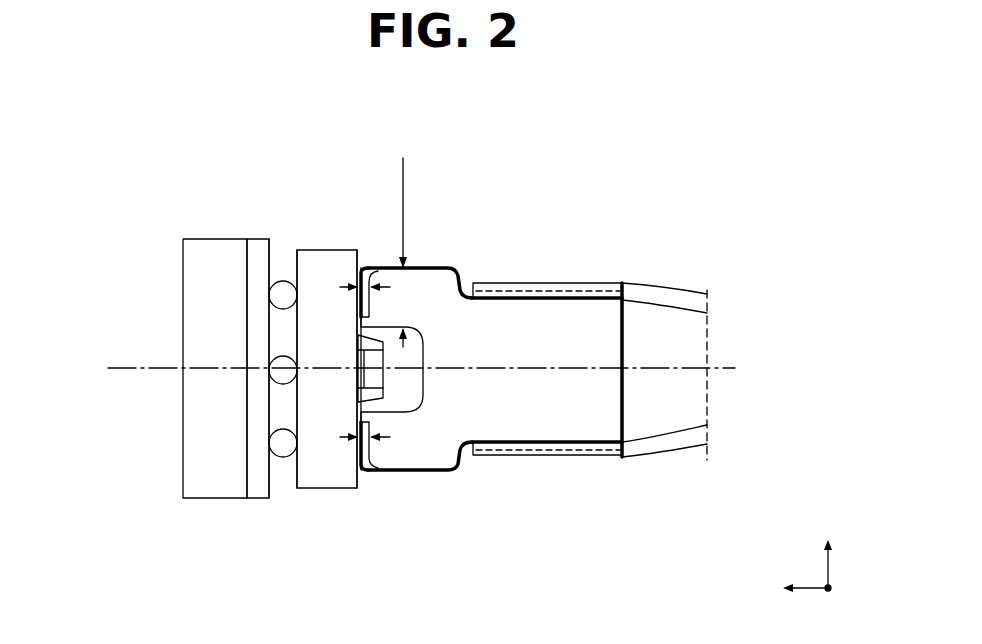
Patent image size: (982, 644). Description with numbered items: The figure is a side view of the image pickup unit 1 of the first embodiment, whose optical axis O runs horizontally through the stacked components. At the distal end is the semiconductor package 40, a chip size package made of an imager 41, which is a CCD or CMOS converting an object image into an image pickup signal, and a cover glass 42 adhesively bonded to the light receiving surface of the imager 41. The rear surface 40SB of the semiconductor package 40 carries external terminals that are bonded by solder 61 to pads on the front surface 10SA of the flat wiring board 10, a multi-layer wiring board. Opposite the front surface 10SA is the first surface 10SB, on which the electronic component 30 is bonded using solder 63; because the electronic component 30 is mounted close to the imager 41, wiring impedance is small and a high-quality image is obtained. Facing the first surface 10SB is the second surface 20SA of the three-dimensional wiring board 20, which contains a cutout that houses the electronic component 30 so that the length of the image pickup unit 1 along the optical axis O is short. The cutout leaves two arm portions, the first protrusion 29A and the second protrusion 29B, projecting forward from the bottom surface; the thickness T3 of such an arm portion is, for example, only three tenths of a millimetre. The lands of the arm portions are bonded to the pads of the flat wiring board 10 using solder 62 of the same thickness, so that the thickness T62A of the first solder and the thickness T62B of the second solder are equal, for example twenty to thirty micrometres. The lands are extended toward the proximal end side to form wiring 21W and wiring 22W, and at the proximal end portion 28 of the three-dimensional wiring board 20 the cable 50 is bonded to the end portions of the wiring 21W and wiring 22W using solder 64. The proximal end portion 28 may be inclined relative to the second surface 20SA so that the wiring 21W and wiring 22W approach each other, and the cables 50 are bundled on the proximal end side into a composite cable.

The image pickup unit 1 is at (742, 182).
The flat wiring board 10 is at (302, 250).
The three-dimensional wiring board 20 is at (506, 290).
The wiring 21W is at (536, 292).
The wiring 22W is at (522, 446).
The proximal end portion 28 is at (624, 393).
The first protrusion 29A is at (432, 268).
The second protrusion 29B is at (446, 472).
The electronic component 30 is at (383, 362).
The semiconductor package 40 is at (272, 167).
The imager 41 is at (257, 239).
The cover glass 42 is at (212, 239).
The cable 50 is at (672, 292).
The solder 61 is at (268, 300).
The solder 62 is at (358, 309).
The solder 63 is at (358, 393).
The solder 64 is at (573, 283).
The optical axis O is at (404, 372).
The thickness of arm portion T3 is at (402, 237).
The thickness of first solder T62A is at (367, 275).
The thickness of second solder T62B is at (370, 446).
The front surface 10SA is at (295, 483).
The first surface 10SB is at (359, 482).
The second surface 20SA is at (358, 455).
The rear surface 40SB is at (271, 466).